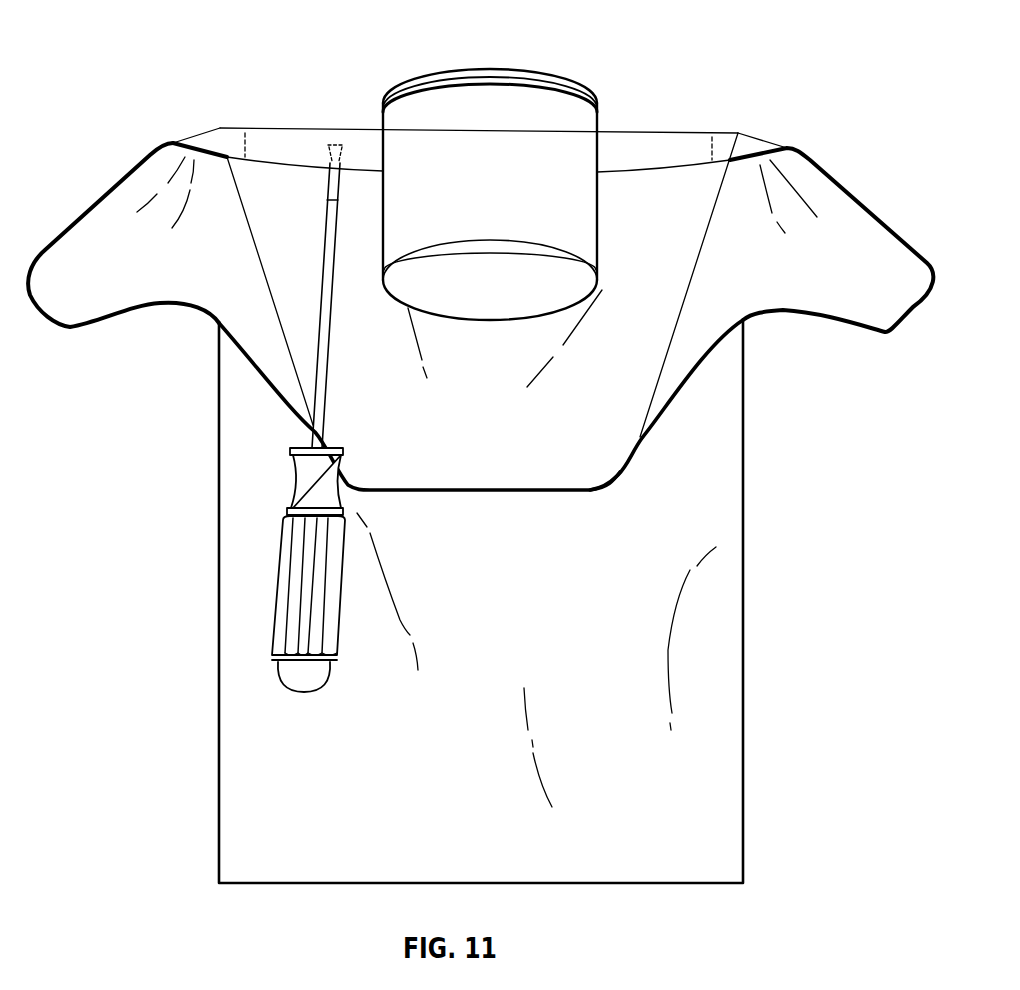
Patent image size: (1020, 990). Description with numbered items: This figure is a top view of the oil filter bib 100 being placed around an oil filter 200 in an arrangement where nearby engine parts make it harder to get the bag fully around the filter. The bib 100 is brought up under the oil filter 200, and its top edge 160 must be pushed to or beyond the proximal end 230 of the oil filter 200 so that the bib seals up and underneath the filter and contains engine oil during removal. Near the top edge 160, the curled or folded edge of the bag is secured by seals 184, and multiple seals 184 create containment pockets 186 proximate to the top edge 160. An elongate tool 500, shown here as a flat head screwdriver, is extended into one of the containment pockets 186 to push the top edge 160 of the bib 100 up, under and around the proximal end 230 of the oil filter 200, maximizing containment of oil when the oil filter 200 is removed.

The oil filter bib 100 is at (805, 567).
The top edge 160 is at (262, 128).
The seals 184 is at (245, 128).
The containment pockets 186 is at (365, 153).
The oil filter 200 is at (582, 137).
The proximal end 230 is at (503, 78).
The elongate tool 500 is at (297, 565).